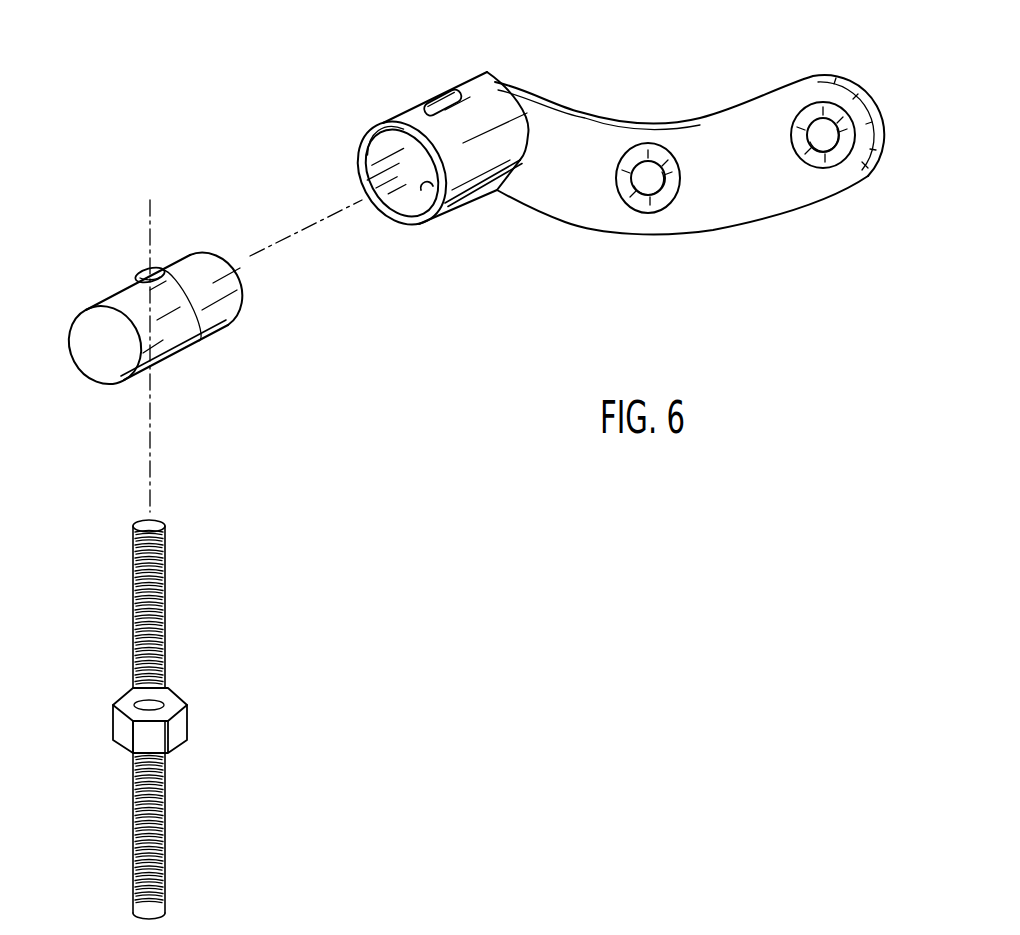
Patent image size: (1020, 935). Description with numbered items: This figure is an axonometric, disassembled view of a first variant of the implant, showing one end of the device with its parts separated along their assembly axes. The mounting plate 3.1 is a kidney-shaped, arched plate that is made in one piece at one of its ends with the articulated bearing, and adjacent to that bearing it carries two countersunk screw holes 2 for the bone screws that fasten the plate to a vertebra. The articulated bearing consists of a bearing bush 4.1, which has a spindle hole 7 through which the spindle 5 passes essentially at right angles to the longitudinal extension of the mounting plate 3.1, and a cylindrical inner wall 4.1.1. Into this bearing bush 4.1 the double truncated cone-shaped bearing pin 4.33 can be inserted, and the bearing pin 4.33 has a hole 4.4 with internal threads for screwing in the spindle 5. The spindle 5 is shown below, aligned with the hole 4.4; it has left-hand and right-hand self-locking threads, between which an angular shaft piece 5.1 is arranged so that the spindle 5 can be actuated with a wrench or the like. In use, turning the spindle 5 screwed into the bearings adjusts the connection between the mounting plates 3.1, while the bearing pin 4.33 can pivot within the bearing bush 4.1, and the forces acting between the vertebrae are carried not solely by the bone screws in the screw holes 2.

The screw holes 2 is at (648, 166).
The mounting plate 3.1 is at (603, 217).
The bearing bush 4.1 is at (368, 136).
The cylindrical inner wall 4.1.1 is at (405, 192).
The double truncated cone-shaped bearing pin 4.33 is at (210, 327).
The hole with internal threads 4.4 is at (140, 268).
The spindle 5 is at (182, 632).
The angular shaft piece 5.1 is at (181, 730).
The spindle hole 7 is at (432, 100).